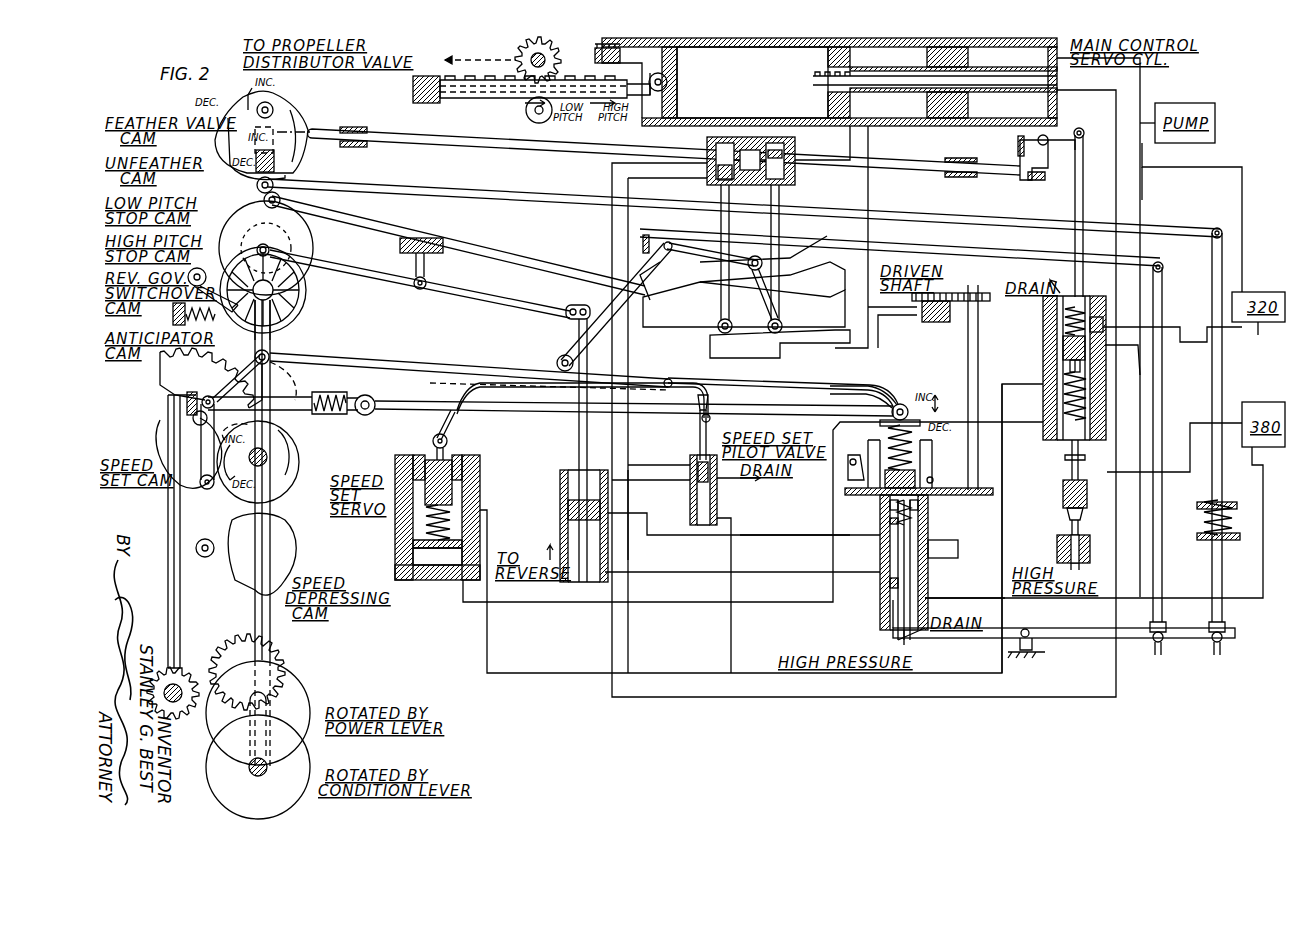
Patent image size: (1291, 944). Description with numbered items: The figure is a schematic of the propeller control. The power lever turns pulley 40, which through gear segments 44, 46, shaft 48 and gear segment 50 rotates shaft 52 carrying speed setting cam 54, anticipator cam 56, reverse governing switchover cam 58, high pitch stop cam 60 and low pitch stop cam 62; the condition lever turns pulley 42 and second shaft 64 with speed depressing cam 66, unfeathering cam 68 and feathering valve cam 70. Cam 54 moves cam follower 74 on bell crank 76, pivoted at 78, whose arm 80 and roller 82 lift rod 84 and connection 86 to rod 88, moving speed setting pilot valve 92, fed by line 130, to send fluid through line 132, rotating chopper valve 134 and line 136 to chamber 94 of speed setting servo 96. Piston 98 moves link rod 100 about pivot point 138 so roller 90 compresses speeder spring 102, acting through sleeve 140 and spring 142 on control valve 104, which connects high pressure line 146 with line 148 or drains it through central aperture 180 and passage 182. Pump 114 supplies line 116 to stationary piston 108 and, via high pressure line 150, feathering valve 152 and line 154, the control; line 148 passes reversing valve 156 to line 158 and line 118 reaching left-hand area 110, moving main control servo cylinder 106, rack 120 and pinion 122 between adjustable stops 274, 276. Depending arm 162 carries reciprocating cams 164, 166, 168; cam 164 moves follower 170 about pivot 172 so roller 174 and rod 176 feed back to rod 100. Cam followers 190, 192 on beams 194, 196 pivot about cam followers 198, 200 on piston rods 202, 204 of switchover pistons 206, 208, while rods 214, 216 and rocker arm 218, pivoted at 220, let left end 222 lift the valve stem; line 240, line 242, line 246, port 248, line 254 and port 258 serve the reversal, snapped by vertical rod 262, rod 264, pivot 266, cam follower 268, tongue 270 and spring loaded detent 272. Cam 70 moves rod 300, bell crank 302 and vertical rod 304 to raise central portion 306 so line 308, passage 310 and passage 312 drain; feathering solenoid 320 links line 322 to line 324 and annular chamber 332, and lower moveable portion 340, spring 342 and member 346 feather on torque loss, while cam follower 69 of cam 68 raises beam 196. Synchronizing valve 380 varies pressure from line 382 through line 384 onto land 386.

The pulley 40 is at (285, 690).
The pulley 42 is at (300, 772).
The gear segment 44 is at (245, 620).
The gear segment 46 is at (185, 668).
The shaft 48 is at (168, 508).
The gear segment 50 is at (245, 343).
The shaft 52 is at (270, 357).
The speed setting cam 54 is at (285, 490).
The anticipator cam 56 is at (290, 386).
The reverse governing switchover cam 58 is at (275, 322).
The high pitch stop cam 60 is at (300, 256).
The low pitch stop cam 62 is at (264, 203).
The second shaft 64 is at (285, 560).
The speed depressing cam 66 is at (285, 535).
The unfeathering cam 68 is at (230, 160).
The cam follower 69 is at (273, 108).
The feathering valve cam 70 is at (302, 112).
The cam follower 74 is at (205, 462).
The bell crank 76 is at (195, 412).
The pivot 78 is at (205, 395).
The arm 80 is at (350, 400).
The roller 82 is at (377, 402).
The rod 84 is at (425, 408).
The connection 86 is at (712, 412).
The rod 88 is at (750, 418).
The roller 90 is at (903, 404).
The speed setting pilot valve 92 is at (690, 496).
The chamber 94 is at (420, 588).
The speed setting servo 96 is at (400, 560).
The piston 98 is at (470, 476).
The link rod 100 is at (768, 381).
The speeder spring 102 is at (880, 431).
The control valve 104 is at (928, 535).
The main control servo cylinder 106 is at (704, 58).
The stationary piston 108 is at (927, 63).
The left-hand area 110 is at (845, 100).
The pump 114 is at (1180, 103).
The line 116 is at (1145, 72).
The line 118 is at (1060, 92).
The rack 120 is at (462, 100).
The pinion 122 is at (558, 56).
The line 130 is at (738, 520).
The line 132 is at (775, 482).
The rotating chopper valve 134 is at (940, 325).
The line 136 is at (895, 320).
The pivot point 138 is at (680, 386).
The sleeve 140 is at (880, 508).
The spring 142 is at (920, 505).
The high pressure line 146 is at (948, 560).
The line 148 is at (645, 572).
The high pressure line 150 is at (1142, 160).
The feathering valve 152 is at (1063, 347).
The line 154 is at (1003, 457).
The reversing valve 156 is at (560, 520).
The line 158 is at (1117, 425).
The depending arm 162 is at (848, 188).
The reciprocating cam 164 is at (788, 282).
The reciprocating cam 166 is at (788, 300).
The reciprocating cam 168 is at (760, 345).
The follower 170 is at (752, 270).
The pivot 172 is at (672, 252).
The roller 174 is at (560, 358).
The rod 176 is at (480, 354).
The central aperture 180 is at (895, 618).
The passage 182 is at (880, 580).
The cam follower 190 is at (312, 215).
The cam follower 192 is at (257, 186).
The beam 194 is at (537, 262).
The beam 196 is at (440, 186).
The cam follower 198 is at (715, 323).
The cam follower 200 is at (780, 320).
The piston rod 202 is at (720, 190).
The piston rod 204 is at (780, 190).
The switchover piston 206 is at (710, 145).
The switchover piston 208 is at (795, 171).
The rod 214 is at (1163, 392).
The rod 216 is at (1228, 366).
The rocker arm 218 is at (1130, 640).
The pivot 220 is at (1030, 632).
The left end 222 is at (905, 638).
The line 240 is at (630, 470).
The line 242 is at (614, 487).
The line 246 is at (640, 172).
The port 248 is at (612, 470).
The line 254 is at (765, 537).
The port 258 is at (880, 522).
The vertical rod 262 is at (578, 306).
The rod 264 is at (500, 296).
The pivot 266 is at (424, 290).
The cam follower 268 is at (290, 243).
The tongue 270 is at (290, 300).
The spring loaded detent 272 is at (225, 310).
The adjustable stop 274 is at (615, 52).
The adjustable stop 276 is at (813, 82).
The rod 300 is at (388, 140).
The bell crank 302 is at (1020, 160).
The vertical rod 304 is at (1080, 180).
The central portion 306 is at (1064, 338).
The line 308 is at (1150, 372).
The passage 310 is at (1070, 352).
The passage 312 is at (1078, 300).
The feathering solenoid 320 is at (1258, 313).
The line 322 is at (1242, 188).
The line 324 is at (1200, 335).
The annular chamber 332 is at (1100, 318).
The lower moveable portion 340 is at (1078, 457).
The spring 342 is at (1064, 405).
The member 346 is at (1062, 497).
The synchronizing valve 380 is at (1105, 500).
The line 382 is at (1205, 418).
The line 384 is at (1262, 580).
The land 386 is at (926, 590).